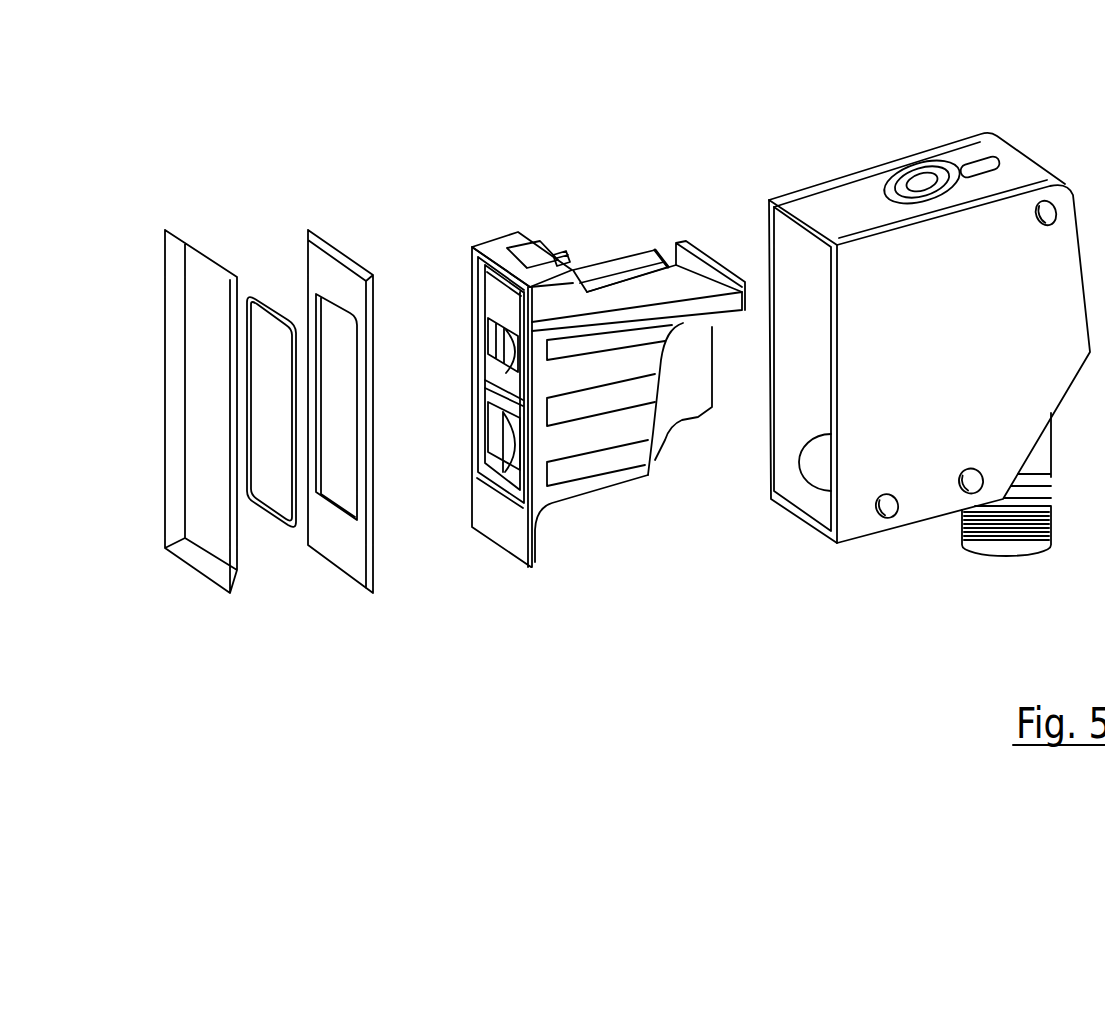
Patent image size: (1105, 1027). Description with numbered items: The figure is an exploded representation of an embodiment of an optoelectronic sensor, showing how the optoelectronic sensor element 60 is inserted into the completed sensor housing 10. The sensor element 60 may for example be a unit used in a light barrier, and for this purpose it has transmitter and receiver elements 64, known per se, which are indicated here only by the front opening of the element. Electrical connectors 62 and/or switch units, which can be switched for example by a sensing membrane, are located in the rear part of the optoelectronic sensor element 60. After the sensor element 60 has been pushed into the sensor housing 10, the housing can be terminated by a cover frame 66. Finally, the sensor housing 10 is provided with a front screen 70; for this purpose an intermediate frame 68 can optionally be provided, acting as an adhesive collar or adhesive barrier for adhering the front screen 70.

The sensor housing 10 is at (861, 101).
The optoelectronic sensor element 60 is at (576, 368).
The electrical connectors 62 is at (612, 241).
The transmitter and receiver elements 64 is at (454, 412).
The cover frame 66 is at (322, 238).
The intermediate frame 68 is at (264, 292).
The front screen 70 is at (166, 285).